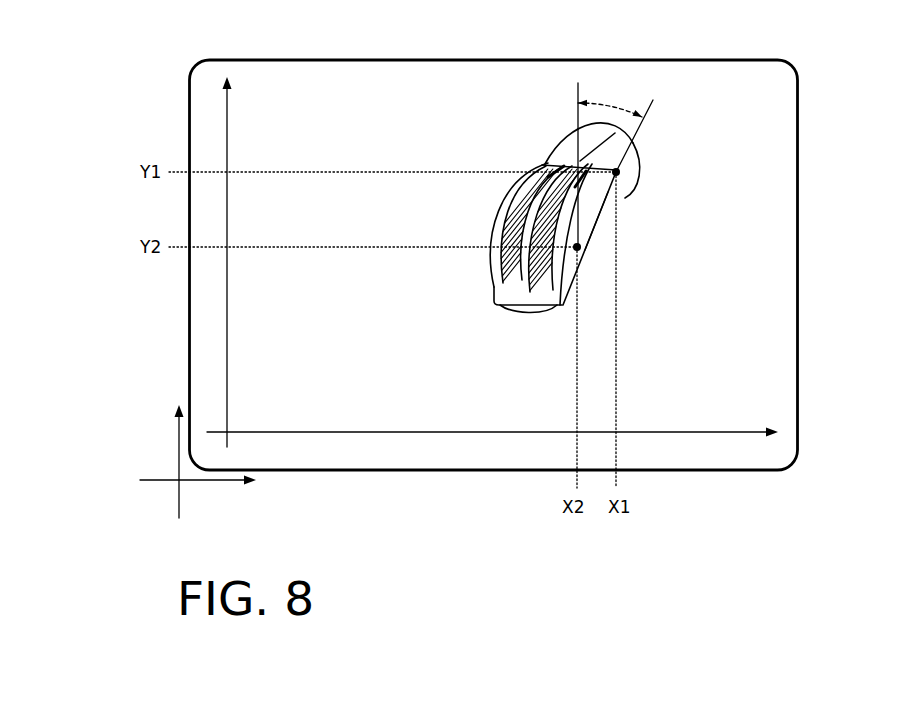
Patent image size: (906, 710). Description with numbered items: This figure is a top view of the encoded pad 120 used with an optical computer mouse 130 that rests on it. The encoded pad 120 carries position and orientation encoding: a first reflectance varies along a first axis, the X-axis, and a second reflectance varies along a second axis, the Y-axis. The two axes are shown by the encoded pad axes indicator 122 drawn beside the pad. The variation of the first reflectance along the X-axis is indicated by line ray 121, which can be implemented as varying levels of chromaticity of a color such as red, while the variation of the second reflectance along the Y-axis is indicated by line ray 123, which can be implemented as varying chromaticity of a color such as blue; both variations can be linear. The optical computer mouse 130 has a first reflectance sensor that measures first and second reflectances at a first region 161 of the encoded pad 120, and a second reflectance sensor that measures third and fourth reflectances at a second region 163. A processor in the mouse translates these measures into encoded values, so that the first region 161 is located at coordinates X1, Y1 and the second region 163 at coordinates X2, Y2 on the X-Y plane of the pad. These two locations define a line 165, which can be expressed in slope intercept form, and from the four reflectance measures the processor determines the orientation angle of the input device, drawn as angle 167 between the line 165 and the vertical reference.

The encoded pad 120 is at (191, 95).
The line ray 121 is at (492, 420).
The encoded pad axes indicator 122 is at (125, 417).
The line ray 123 is at (240, 262).
The optical computer mouse 130 is at (545, 165).
The first region 161 is at (617, 175).
The second region 163 is at (580, 249).
The line 165 is at (598, 218).
The blade angle 167 is at (621, 106).